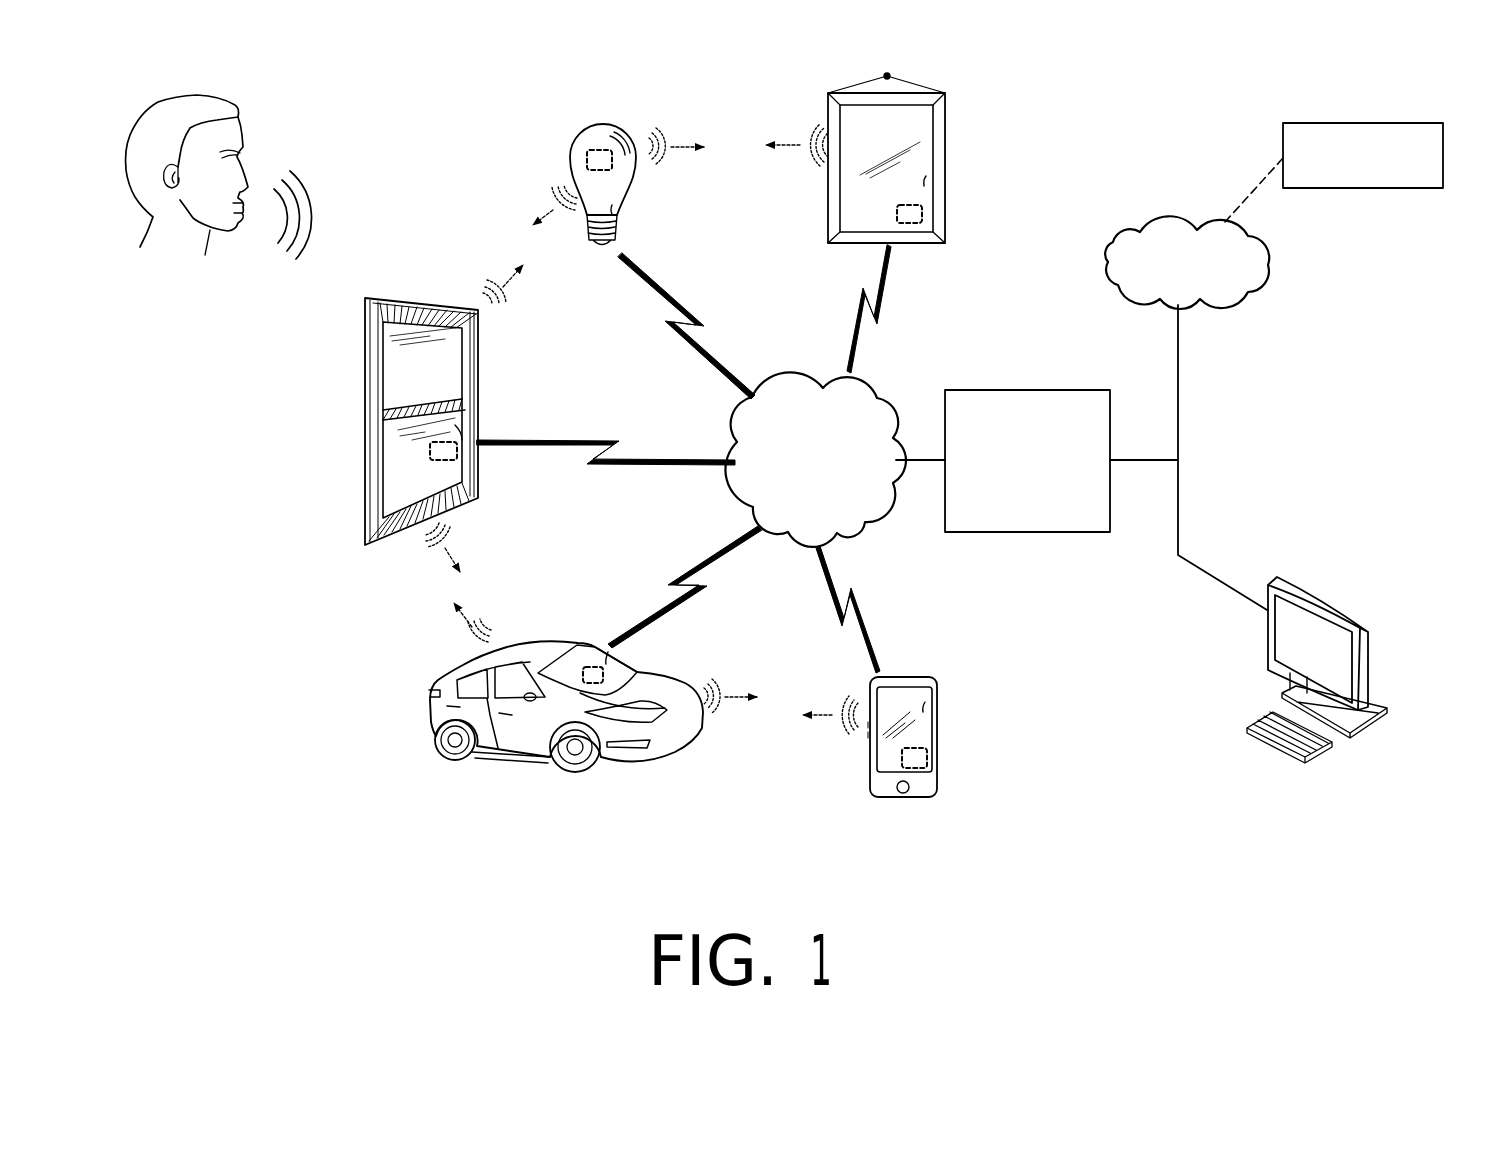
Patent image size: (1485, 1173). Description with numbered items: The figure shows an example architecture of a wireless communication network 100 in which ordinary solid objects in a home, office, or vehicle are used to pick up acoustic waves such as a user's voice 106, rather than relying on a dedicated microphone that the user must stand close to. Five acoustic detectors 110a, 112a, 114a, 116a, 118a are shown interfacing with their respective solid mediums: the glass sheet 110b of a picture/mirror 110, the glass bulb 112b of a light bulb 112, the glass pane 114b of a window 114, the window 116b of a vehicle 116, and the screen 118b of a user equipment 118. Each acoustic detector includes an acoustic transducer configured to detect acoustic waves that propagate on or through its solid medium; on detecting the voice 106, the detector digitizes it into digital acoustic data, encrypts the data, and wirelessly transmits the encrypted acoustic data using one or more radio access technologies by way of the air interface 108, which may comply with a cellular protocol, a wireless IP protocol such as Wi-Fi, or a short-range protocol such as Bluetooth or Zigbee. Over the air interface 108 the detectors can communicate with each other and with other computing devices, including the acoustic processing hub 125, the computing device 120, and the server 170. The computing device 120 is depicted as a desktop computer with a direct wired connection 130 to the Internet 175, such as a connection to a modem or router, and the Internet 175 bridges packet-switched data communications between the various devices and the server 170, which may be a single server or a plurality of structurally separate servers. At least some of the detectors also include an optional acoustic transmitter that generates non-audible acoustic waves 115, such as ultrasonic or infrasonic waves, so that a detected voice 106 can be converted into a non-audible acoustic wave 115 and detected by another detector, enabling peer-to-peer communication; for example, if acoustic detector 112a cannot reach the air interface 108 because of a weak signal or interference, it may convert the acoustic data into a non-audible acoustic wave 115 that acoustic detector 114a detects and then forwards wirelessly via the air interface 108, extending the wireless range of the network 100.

The wireless communication network 100 is at (236, 681).
The voice 106 is at (305, 185).
The air interface 108 is at (870, 383).
The picture/mirror 110 is at (931, 154).
The acoustic detector 110a is at (922, 207).
The glass sheet 110b is at (925, 177).
The light bulb 112 is at (656, 169).
The acoustic detector 112a is at (597, 171).
The glass bulb 112b is at (612, 205).
The window 114 is at (482, 421).
The acoustic detector 114a is at (457, 444).
The glass pane 114b is at (460, 424).
The non-audible acoustic waves 115 is at (777, 137).
The vehicle 116 is at (587, 701).
The acoustic detector 116a is at (603, 674).
The window 116b is at (610, 651).
The user equipment 118 is at (918, 746).
The acoustic detector 118a is at (926, 752).
The screen 118b is at (925, 702).
The computing device 120 is at (1318, 585).
The acoustic processing hub 125 is at (1010, 390).
The direct wired connection 130 is at (1178, 503).
The server 170 is at (1372, 190).
The Internet 175 is at (1137, 233).